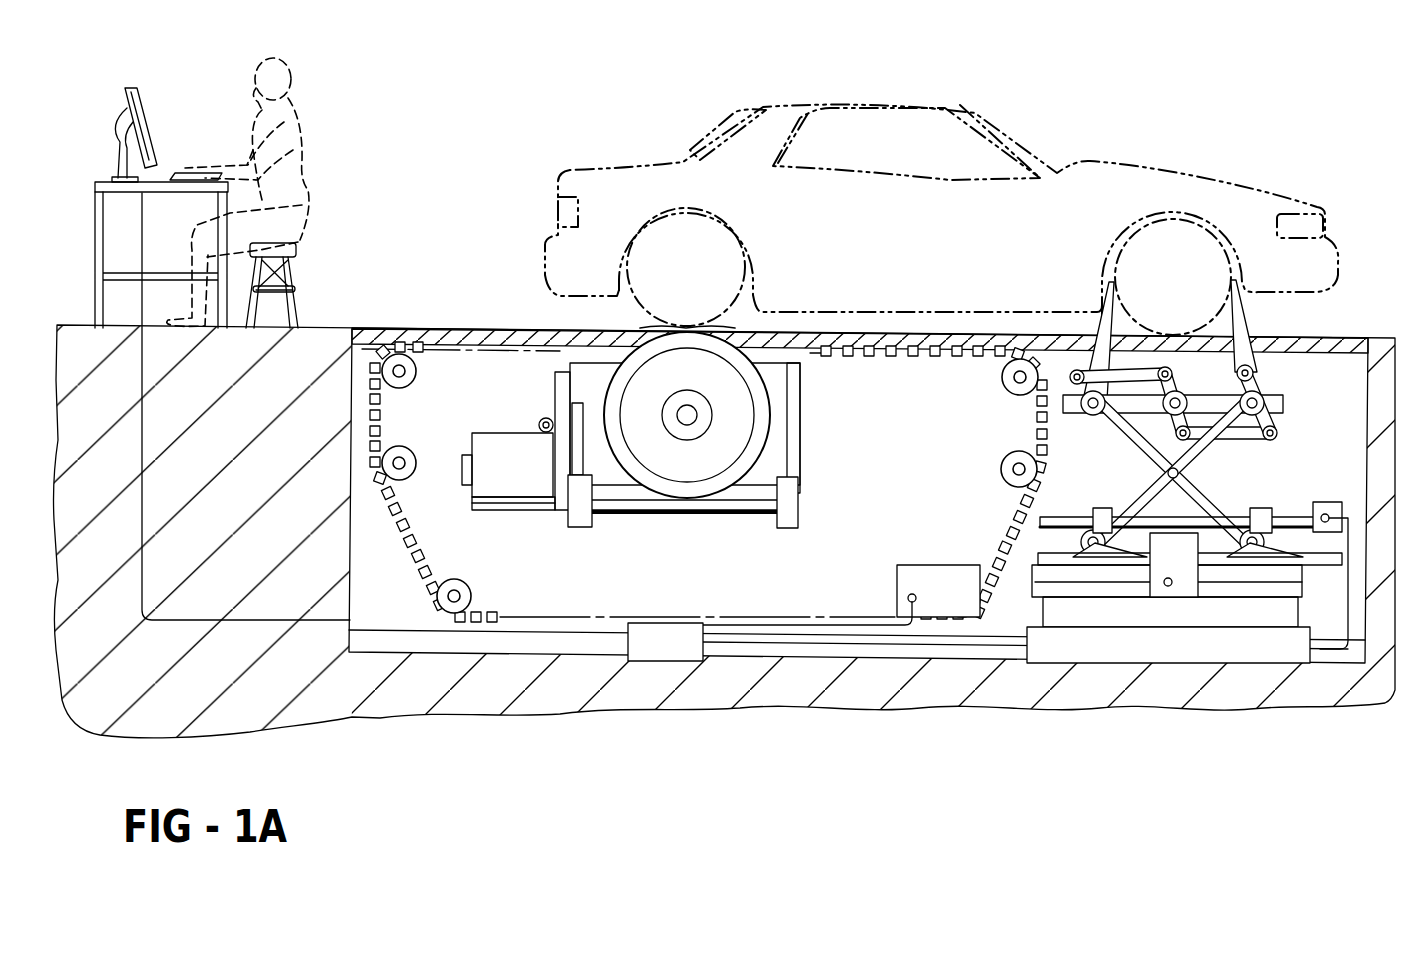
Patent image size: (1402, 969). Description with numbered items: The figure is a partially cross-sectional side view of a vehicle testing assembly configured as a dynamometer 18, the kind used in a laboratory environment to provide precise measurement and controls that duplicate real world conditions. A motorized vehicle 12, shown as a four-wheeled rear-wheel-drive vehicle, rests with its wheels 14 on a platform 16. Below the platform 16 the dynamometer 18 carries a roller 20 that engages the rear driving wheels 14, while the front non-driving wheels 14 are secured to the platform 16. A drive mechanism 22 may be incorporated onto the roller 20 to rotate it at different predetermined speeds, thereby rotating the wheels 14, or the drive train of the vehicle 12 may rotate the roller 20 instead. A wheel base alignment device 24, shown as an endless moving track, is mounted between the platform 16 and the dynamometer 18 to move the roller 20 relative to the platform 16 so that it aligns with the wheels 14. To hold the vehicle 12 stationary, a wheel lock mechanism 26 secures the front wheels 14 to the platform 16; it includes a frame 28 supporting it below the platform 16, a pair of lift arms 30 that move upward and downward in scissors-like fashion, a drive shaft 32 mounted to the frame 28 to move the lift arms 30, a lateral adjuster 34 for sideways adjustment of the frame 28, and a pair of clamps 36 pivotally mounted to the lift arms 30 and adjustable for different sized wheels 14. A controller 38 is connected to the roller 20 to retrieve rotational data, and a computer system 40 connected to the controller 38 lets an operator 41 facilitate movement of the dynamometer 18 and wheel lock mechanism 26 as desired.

The motorized vehicle 12 is at (1102, 180).
The wheel 14 is at (727, 262).
The platform 16 is at (1350, 340).
The dynamometer 18 is at (710, 430).
The roller 20 is at (755, 385).
The drive mechanism 22 is at (502, 447).
The wheel base alignment device 24 is at (393, 525).
The wheel lock mechanism 26 is at (1193, 534).
The frame 28 is at (1315, 573).
The lift arms 30 is at (1148, 497).
The drive shaft 32 is at (1278, 510).
The lateral adjuster 34 is at (1178, 580).
The clamps 36 is at (1240, 320).
The controller 38 is at (668, 648).
The computer system 40 is at (130, 86).
The operator 41 is at (287, 147).